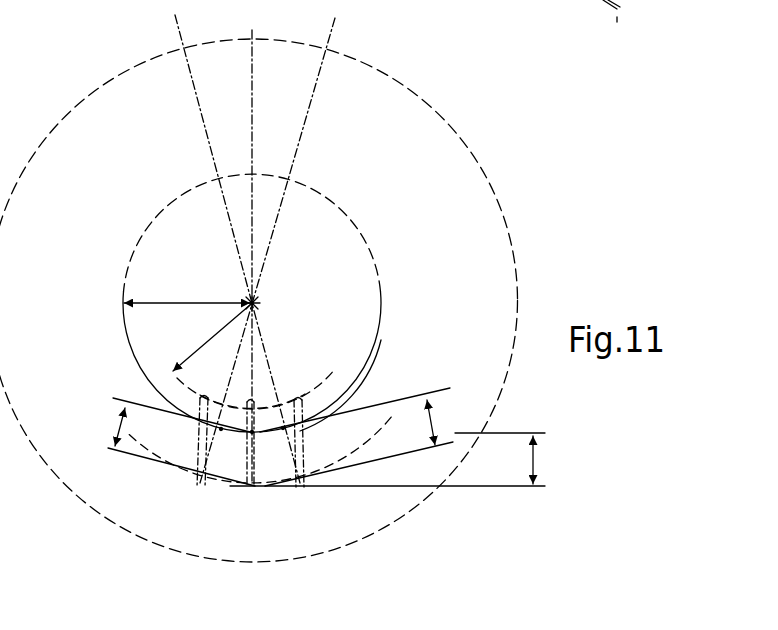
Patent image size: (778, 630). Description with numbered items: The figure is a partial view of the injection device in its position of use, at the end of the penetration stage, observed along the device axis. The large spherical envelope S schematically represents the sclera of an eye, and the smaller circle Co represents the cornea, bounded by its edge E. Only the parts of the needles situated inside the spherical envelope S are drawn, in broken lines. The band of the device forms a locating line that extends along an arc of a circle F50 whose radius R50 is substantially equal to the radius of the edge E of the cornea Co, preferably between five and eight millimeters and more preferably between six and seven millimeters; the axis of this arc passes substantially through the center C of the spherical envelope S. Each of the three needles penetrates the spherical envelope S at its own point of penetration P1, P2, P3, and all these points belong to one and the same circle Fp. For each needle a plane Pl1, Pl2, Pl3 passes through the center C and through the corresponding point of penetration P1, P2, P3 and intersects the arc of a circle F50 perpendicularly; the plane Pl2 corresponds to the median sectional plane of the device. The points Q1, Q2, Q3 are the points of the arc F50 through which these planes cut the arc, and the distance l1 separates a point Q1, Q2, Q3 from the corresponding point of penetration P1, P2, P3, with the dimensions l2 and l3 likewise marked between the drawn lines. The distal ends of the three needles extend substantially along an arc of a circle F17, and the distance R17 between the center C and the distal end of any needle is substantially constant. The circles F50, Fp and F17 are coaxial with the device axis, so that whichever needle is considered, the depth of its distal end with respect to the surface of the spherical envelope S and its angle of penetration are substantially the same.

The spherical envelope S is at (503, 219).
The cornea Co is at (322, 198).
The arc of a circle of the band F50 is at (382, 297).
The edge of the cornea E is at (381, 340).
The center of the spherical envelope C is at (240, 291).
The radius of the arc of a circle F50 R50 is at (187, 285).
The distance between the center and the distal end of the needle R17 is at (252, 357).
The arc of a circle of the distal ends F17 is at (347, 362).
The plane of the first needle Pl1 is at (286, 250).
The plane of the second needle Pl2 is at (251, 244).
The plane of the third needle Pl3 is at (214, 249).
The point of penetration of the first needle P1 is at (200, 490).
The point of penetration of the second needle P2 is at (254, 489).
The point of penetration of the third needle P3 is at (302, 489).
The circle of the points of penetration Fp is at (367, 447).
The distance between points Q and P l1 is at (108, 425).
The second distance l2 is at (546, 460).
The third distance l3 is at (441, 422).
The intersection point of plane Pl1 with arc F50 Q1 is at (221, 428).
The intersection point of plane Pl2 with arc F50 Q2 is at (251, 432).
The intersection point of plane Pl3 with arc F50 Q3 is at (290, 429).